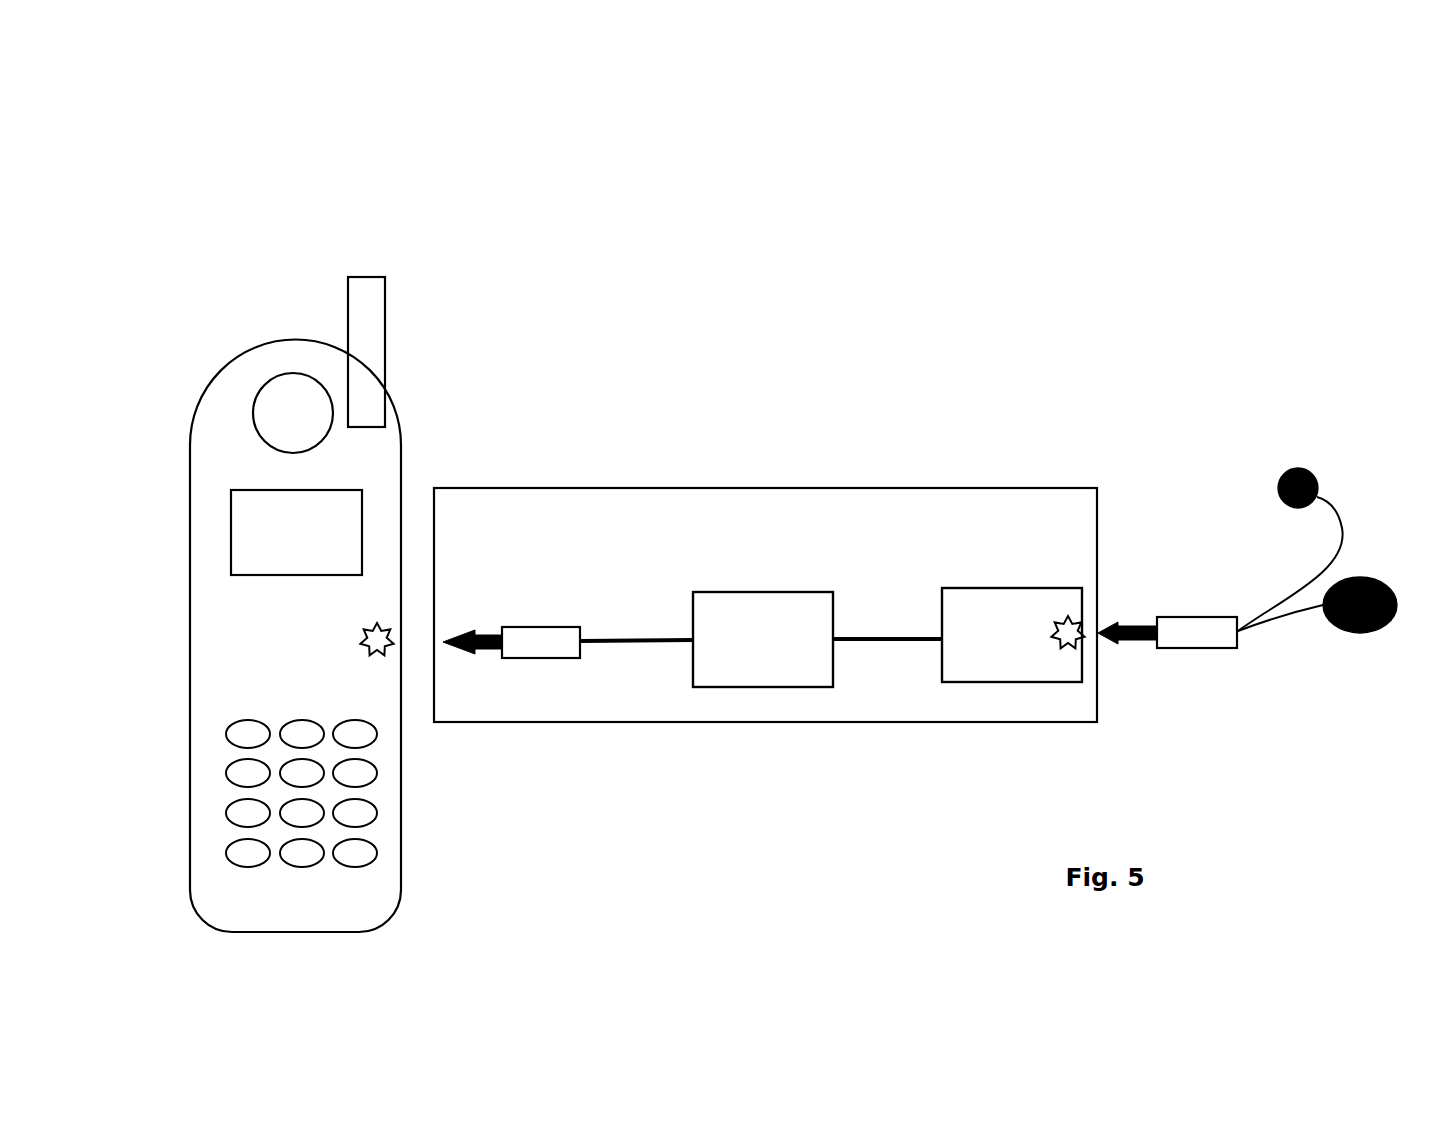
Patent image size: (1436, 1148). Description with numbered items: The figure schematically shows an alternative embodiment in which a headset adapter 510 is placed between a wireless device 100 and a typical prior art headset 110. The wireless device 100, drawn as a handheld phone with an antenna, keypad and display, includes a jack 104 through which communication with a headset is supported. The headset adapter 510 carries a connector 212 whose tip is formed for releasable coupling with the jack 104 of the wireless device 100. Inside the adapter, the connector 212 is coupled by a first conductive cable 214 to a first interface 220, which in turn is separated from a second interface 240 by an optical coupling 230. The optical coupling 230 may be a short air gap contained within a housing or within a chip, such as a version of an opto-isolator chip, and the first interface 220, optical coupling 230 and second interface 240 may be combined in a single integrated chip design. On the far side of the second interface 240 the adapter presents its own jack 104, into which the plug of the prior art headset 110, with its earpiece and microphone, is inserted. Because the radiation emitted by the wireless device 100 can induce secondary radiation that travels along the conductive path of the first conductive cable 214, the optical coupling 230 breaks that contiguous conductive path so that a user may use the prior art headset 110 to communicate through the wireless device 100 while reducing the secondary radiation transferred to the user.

The wireless device 100 is at (235, 417).
The headset adapter 510 is at (519, 544).
The first conductive cable 214 is at (638, 640).
The first interface 220 is at (763, 592).
The second interface 240 is at (1052, 588).
The optical coupling 230 is at (915, 639).
The connector 212 is at (542, 643).
The jack 104 is at (377, 640).
The prior art headset 110 is at (1262, 615).